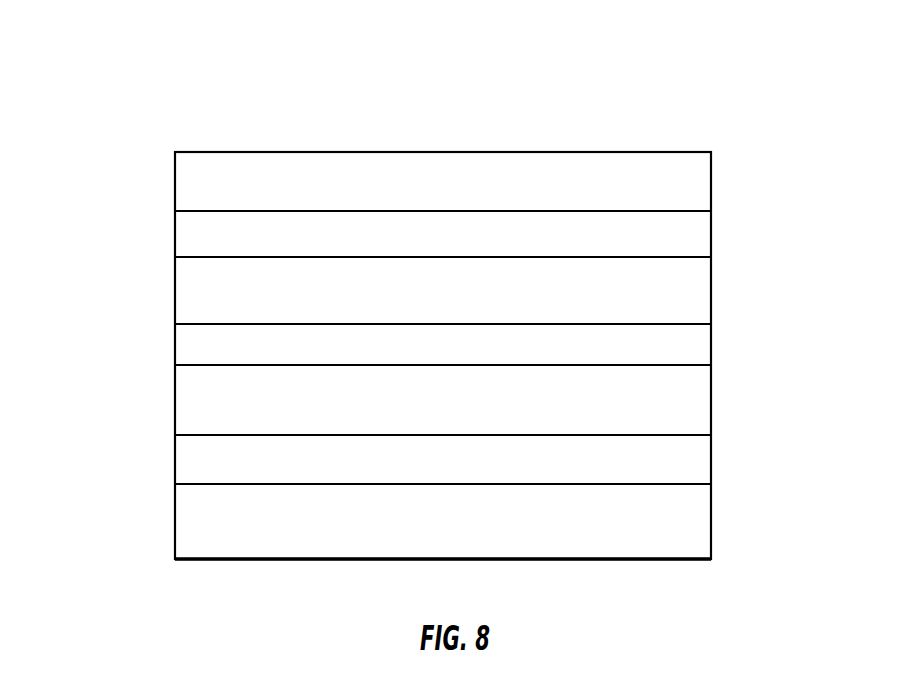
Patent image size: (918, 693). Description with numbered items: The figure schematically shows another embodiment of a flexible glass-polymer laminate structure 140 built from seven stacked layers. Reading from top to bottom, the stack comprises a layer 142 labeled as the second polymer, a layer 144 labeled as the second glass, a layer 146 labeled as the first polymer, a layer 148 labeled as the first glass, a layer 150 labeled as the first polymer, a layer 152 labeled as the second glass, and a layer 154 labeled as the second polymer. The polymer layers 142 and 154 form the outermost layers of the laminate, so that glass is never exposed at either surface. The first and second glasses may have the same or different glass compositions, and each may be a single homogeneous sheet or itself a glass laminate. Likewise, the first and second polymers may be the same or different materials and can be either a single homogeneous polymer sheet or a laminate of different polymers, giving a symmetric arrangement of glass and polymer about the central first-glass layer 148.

The flexible glass-polymer laminate structure 140 is at (624, 105).
The layer (Polymer 2) 142 is at (150, 187).
The layer (Glass 2) 144 is at (150, 237).
The layer (Polymer 1) 146 is at (150, 285).
The layer (Glass 1) 148 is at (150, 333).
The layer (Polymer 1) 150 is at (150, 413).
The layer (Glass 2) 152 is at (150, 469).
The layer (Polymer 2) 154 is at (150, 525).